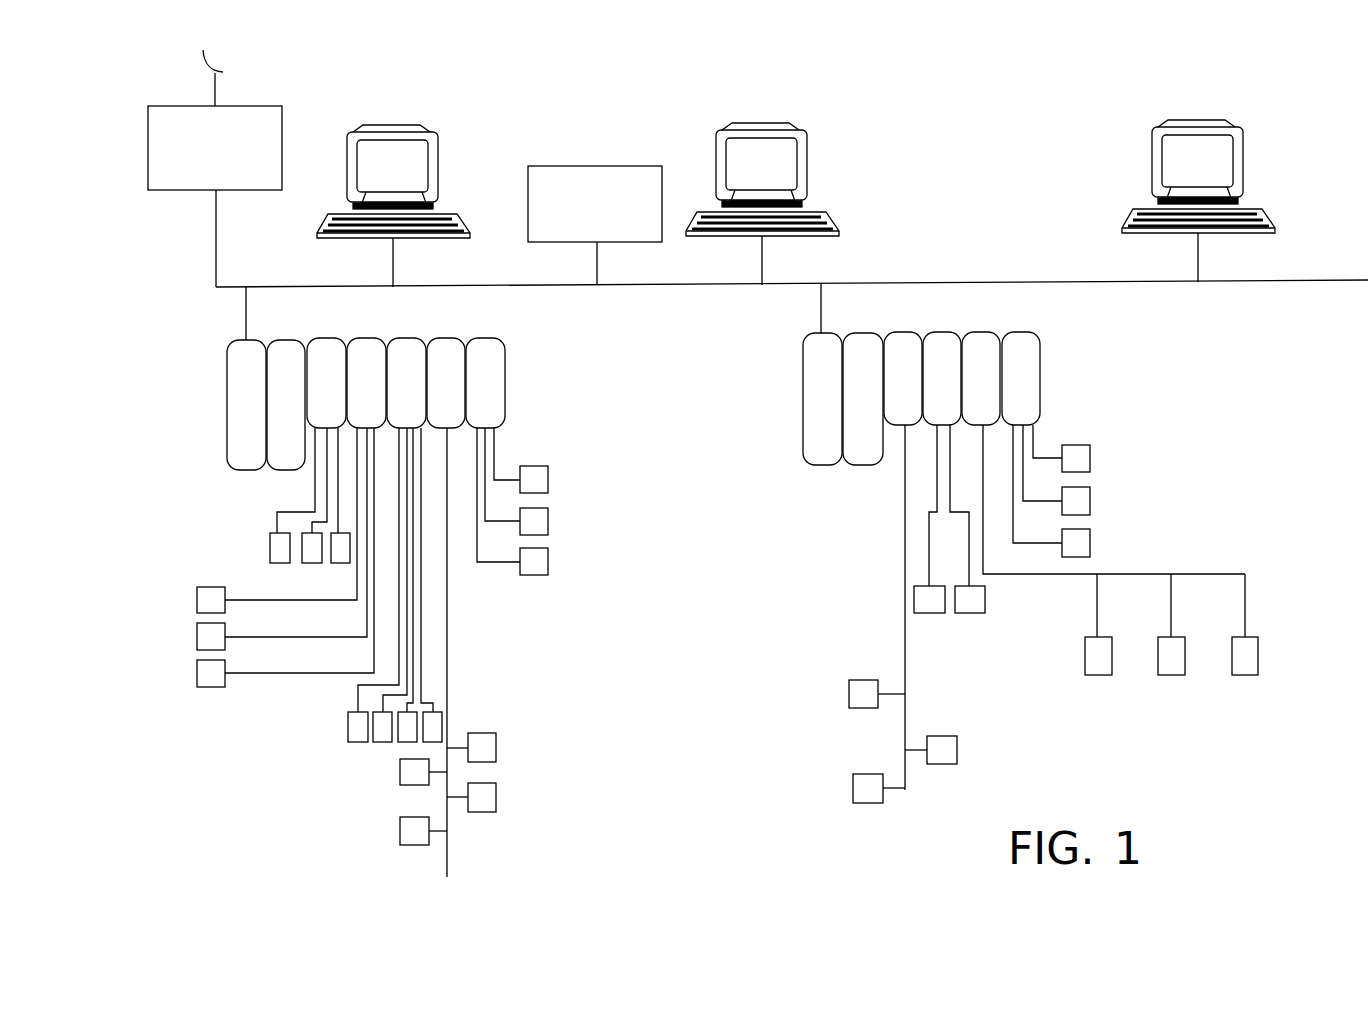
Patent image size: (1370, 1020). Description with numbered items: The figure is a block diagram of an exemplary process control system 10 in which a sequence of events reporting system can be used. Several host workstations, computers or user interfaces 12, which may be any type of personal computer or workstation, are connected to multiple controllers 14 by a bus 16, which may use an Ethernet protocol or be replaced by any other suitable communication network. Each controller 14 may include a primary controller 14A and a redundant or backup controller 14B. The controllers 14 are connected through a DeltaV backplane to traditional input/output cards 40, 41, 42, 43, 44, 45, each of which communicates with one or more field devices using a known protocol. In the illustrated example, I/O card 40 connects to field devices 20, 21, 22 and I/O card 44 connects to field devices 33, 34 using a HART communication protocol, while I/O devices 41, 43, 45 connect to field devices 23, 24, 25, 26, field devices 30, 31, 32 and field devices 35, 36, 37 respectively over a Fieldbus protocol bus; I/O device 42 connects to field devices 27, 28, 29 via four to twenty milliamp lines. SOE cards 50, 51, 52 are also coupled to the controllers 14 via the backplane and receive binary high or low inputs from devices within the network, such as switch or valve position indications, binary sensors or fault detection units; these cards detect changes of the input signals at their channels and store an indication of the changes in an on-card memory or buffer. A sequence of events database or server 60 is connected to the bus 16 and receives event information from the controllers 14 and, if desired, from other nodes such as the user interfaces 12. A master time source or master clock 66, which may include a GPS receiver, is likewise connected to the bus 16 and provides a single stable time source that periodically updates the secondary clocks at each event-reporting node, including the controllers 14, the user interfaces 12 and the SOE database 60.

The process control system 10 is at (914, 94).
The host workstation 12 is at (440, 165).
The controller 14 is at (182, 343).
The primary controller 14A is at (245, 471).
The redundant controller 14B is at (296, 471).
The bus 16 is at (648, 287).
The field device 20 is at (196, 600).
The field device 21 is at (196, 637).
The field device 22 is at (196, 673).
The field device 23 is at (398, 772).
The field device 24 is at (398, 829).
The field device 25 is at (497, 748).
The field device 26 is at (497, 798).
The field device 27 is at (548, 480).
The field device 28 is at (548, 521).
The field device 29 is at (548, 562).
The field device 30 is at (848, 694).
The field device 31 is at (852, 780).
The field device 32 is at (957, 750).
The field device 33 is at (927, 613).
The field device 34 is at (970, 613).
The field device 35 is at (1097, 675).
The field device 36 is at (1171, 675).
The field device 37 is at (1245, 675).
The input/output card 40 is at (372, 336).
The input/output card 41 is at (448, 336).
The input/output card 42 is at (492, 336).
The input/output card 43 is at (905, 330).
The input/output card 44 is at (948, 330).
The input/output card 45 is at (987, 330).
The SOE card 50 is at (332, 336).
The SOE card 51 is at (410, 336).
The SOE card 52 is at (1028, 330).
The SOE database 60 is at (592, 165).
The master clock 66 is at (176, 191).